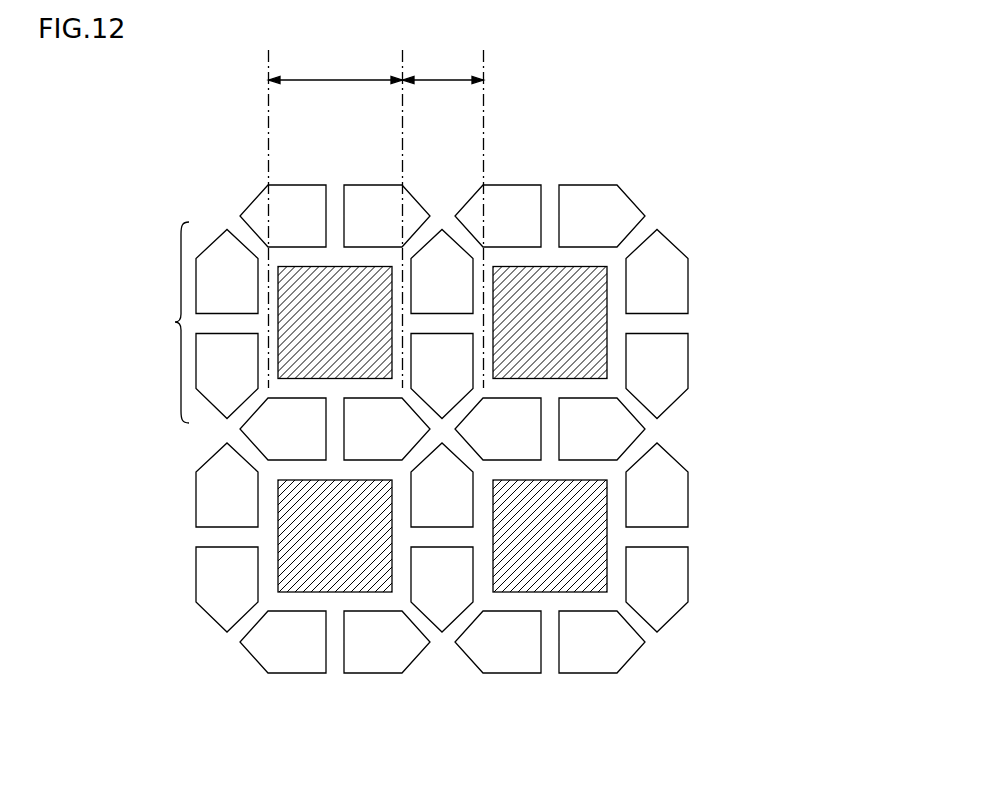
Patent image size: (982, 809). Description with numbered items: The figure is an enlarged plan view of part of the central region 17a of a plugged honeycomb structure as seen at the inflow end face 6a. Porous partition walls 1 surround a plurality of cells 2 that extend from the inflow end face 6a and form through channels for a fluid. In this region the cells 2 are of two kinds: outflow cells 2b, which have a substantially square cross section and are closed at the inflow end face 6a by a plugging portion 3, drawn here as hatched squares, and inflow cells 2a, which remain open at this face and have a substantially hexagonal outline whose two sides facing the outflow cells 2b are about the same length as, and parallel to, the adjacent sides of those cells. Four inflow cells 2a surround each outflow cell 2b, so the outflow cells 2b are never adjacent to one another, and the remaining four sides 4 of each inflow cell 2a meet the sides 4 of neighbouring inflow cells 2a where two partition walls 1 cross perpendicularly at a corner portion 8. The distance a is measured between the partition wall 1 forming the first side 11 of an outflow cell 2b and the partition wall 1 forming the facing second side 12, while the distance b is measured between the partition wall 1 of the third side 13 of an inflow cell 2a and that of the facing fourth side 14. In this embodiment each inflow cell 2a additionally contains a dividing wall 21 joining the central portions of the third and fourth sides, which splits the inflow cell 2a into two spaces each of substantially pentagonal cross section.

The central region 17a is at (833, 73).
The inflow end face 6a is at (220, 140).
The partition wall 1 is at (260, 240).
The dividing wall 21 is at (222, 323).
The cell 2 is at (227, 327).
The inflow cell 2a is at (177, 322).
The outflow cell 2b is at (323, 307).
The plugging portion 3 is at (318, 345).
The corner portion 8 is at (617, 185).
The first side 11 is at (277, 533).
The second side 12 is at (390, 572).
The third side 13 is at (410, 565).
The fourth side 14 is at (473, 515).
The side 4 is at (457, 618).